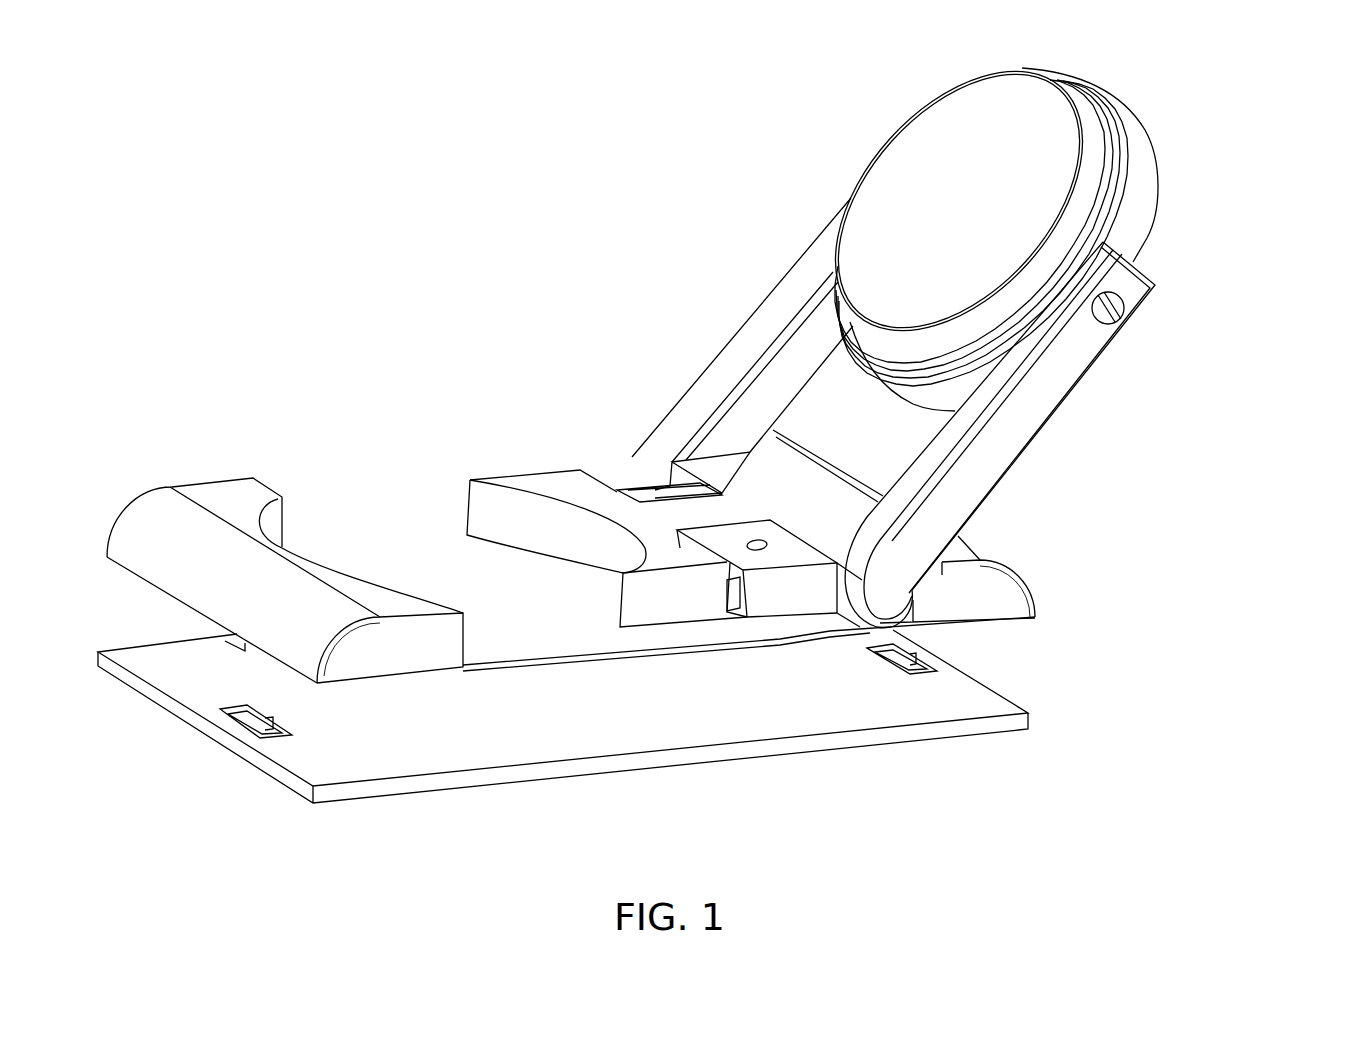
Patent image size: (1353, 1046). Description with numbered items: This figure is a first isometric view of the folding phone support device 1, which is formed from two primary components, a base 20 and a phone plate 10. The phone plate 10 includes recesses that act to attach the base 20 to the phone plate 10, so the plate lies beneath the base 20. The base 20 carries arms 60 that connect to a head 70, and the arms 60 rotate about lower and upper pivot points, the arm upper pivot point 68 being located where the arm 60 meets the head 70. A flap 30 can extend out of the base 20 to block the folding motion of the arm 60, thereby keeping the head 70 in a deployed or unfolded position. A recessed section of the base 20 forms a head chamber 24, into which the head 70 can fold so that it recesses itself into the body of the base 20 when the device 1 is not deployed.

The folding phone support device 1 is at (440, 285).
The phone plate 10 is at (612, 725).
The base 20 is at (1015, 597).
The head chamber 24 is at (430, 520).
The flap 30 is at (736, 545).
The arms 60 is at (1042, 402).
The arm upper pivot point 68 is at (1122, 307).
The head 70 is at (1200, 165).